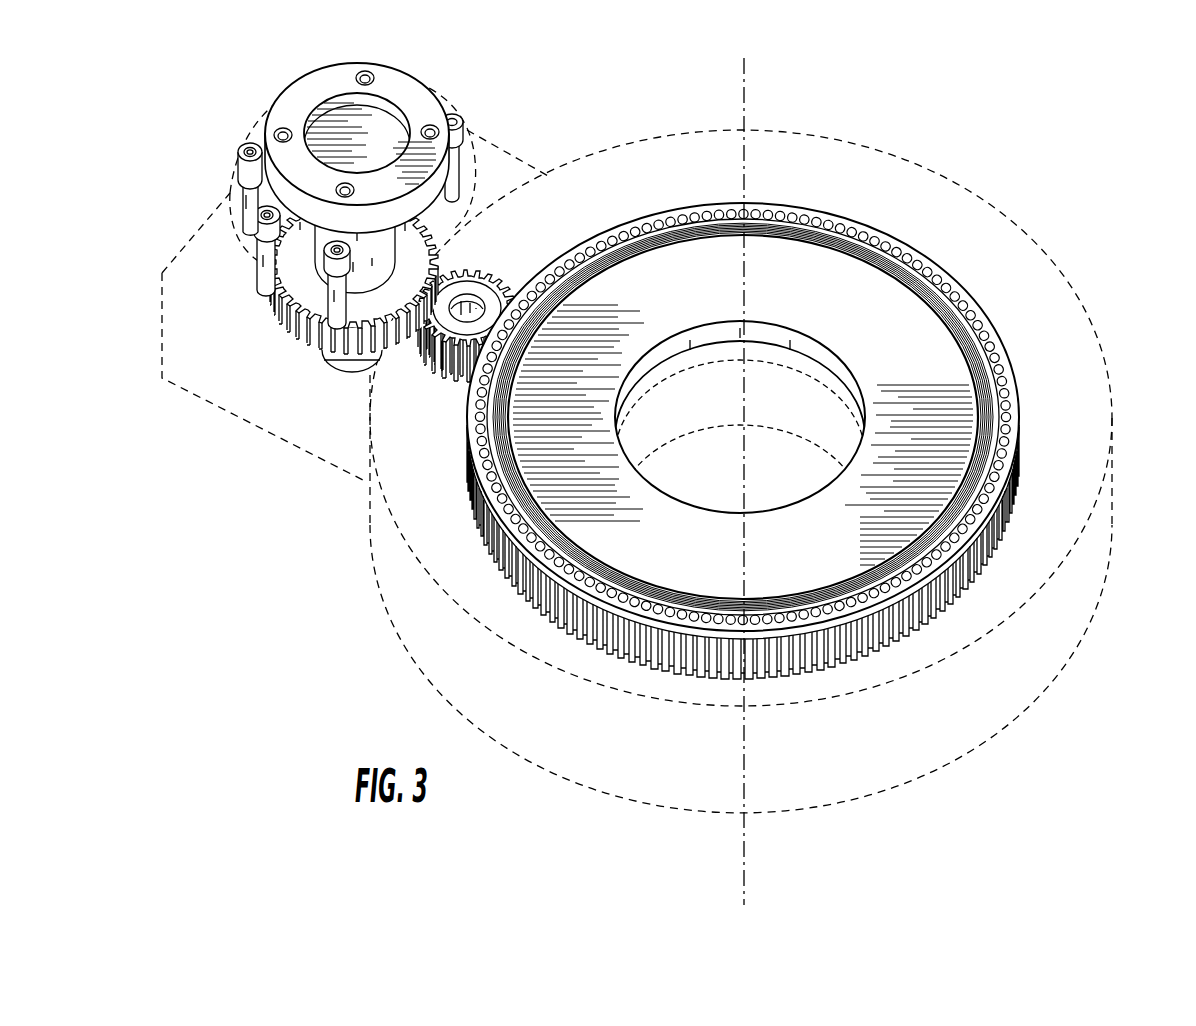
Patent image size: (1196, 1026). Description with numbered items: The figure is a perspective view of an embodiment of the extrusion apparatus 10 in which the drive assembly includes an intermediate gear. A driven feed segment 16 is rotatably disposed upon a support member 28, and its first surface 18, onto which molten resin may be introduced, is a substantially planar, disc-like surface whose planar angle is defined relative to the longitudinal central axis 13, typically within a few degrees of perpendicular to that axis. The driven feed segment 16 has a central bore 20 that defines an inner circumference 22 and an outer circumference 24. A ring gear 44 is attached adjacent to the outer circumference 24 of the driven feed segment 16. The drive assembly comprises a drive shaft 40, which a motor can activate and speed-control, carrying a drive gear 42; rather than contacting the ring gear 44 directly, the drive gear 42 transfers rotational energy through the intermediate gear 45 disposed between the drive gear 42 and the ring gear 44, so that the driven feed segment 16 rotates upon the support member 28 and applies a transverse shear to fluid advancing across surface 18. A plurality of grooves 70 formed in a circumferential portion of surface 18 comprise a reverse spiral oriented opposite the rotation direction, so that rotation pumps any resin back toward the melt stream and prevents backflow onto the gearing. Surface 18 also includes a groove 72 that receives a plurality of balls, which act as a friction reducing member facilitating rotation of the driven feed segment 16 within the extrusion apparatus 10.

The extrusion apparatus 10 is at (669, 470).
The longitudinal central axis 13 is at (744, 123).
The driven feed segment 16 is at (733, 441).
The first surface 18 is at (906, 348).
The bore 20 is at (739, 410).
The inner circumference 22 is at (680, 343).
The outer circumference 24 is at (540, 580).
The support member 28 is at (1113, 435).
The drive shaft 40 is at (410, 227).
The drive gear 42 is at (308, 330).
The ring gear 44 is at (653, 665).
The intermediate gear 45 is at (433, 360).
The grooves 70 is at (530, 520).
The groove receiving a plurality of balls 72 is at (953, 297).